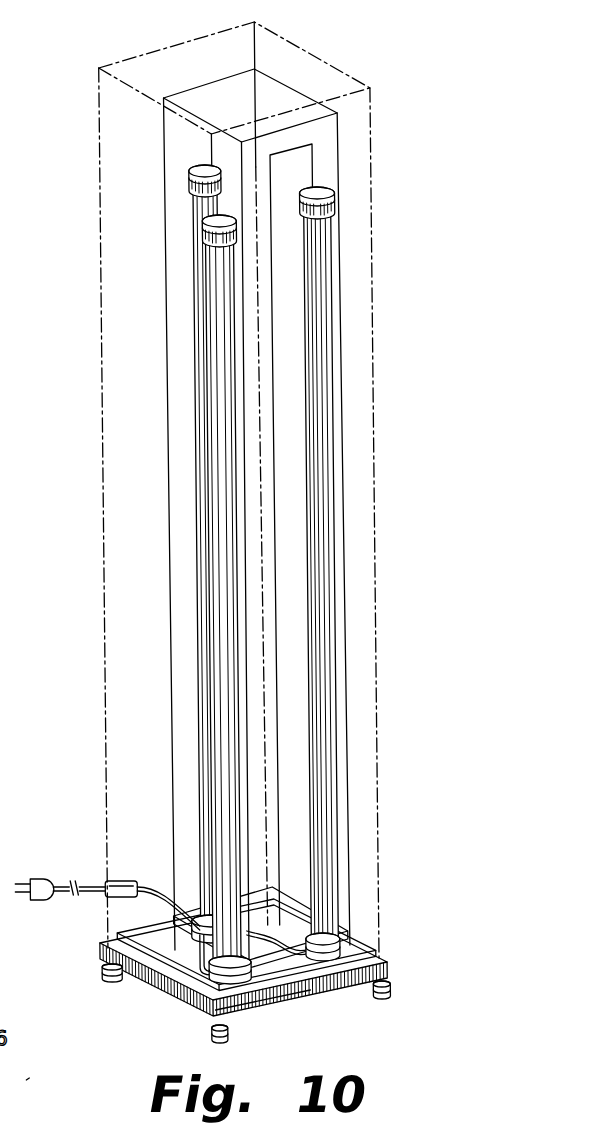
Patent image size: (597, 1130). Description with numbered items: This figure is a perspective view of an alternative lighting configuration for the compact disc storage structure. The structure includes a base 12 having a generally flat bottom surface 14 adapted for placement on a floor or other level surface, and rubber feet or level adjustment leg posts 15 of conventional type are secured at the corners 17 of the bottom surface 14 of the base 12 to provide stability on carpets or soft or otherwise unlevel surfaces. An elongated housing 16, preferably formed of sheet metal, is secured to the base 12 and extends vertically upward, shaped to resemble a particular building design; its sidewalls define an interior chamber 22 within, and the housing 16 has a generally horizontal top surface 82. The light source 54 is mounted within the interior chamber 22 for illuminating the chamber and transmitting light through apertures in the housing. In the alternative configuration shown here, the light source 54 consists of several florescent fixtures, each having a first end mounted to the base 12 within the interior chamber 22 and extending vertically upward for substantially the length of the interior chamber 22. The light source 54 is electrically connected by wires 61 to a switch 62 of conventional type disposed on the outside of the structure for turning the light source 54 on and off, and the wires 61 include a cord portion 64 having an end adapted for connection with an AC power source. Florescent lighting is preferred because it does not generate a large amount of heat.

The base 12 is at (328, 985).
The bottom surface 14 is at (310, 1000).
The rubber feet or level adjustment leg posts 15 is at (100, 975).
The housing 16 is at (90, 722).
The corners 17 is at (87, 952).
The interior chamber 22 is at (155, 960).
The light source 54 is at (332, 720).
The wires 61 is at (290, 935).
The switch 62 is at (116, 880).
The cord portion 64 is at (53, 883).
The top surface 82 is at (14, 1086).